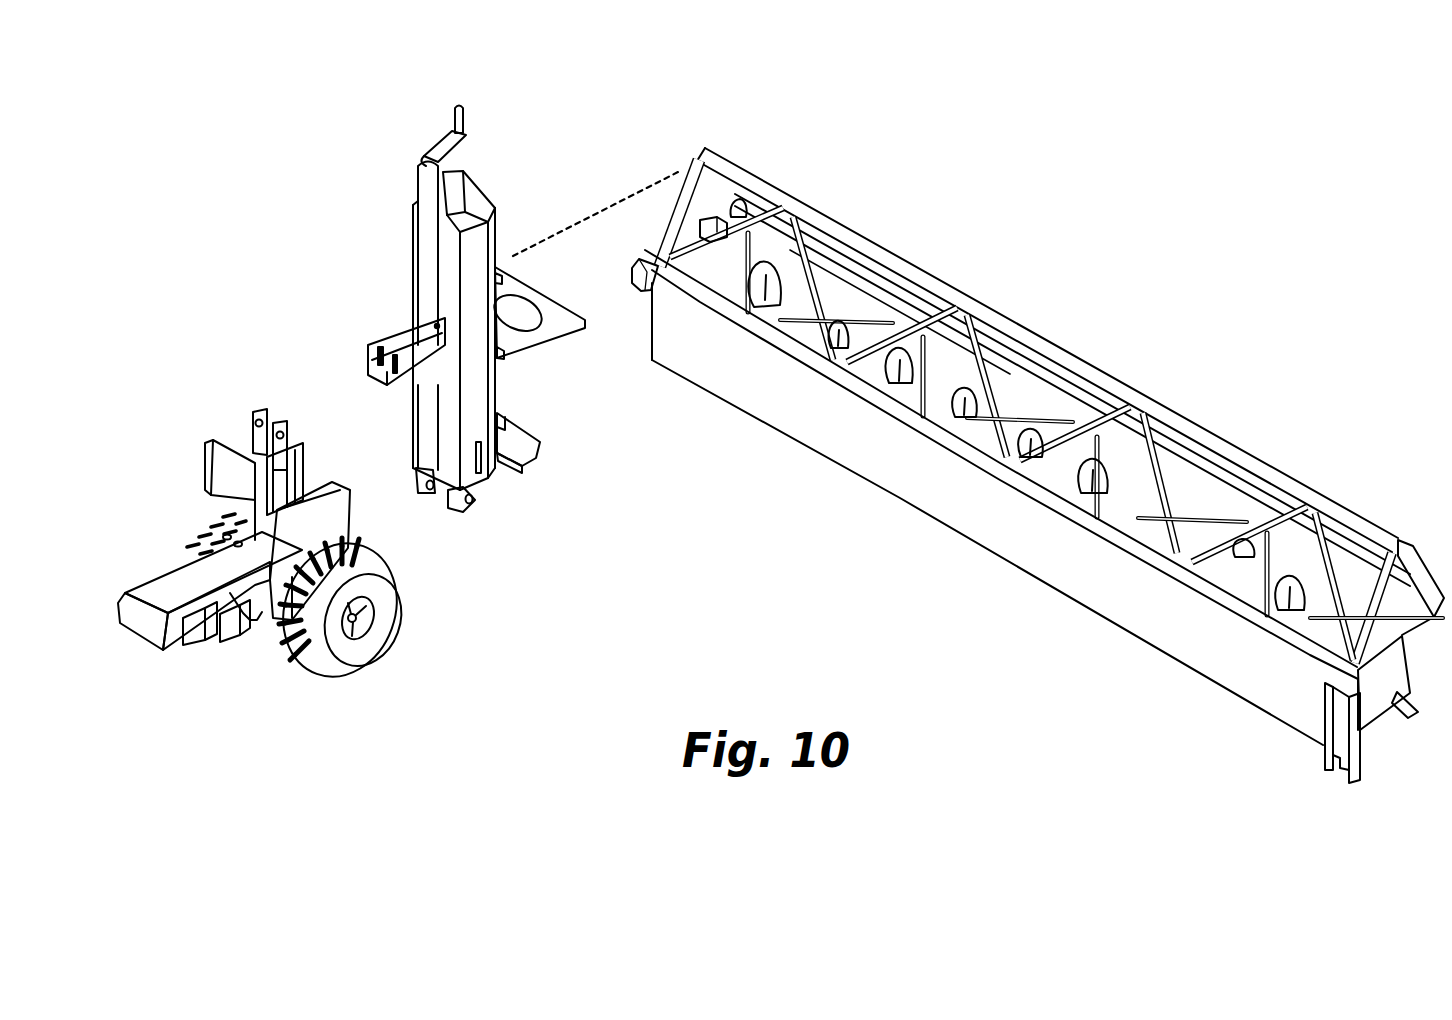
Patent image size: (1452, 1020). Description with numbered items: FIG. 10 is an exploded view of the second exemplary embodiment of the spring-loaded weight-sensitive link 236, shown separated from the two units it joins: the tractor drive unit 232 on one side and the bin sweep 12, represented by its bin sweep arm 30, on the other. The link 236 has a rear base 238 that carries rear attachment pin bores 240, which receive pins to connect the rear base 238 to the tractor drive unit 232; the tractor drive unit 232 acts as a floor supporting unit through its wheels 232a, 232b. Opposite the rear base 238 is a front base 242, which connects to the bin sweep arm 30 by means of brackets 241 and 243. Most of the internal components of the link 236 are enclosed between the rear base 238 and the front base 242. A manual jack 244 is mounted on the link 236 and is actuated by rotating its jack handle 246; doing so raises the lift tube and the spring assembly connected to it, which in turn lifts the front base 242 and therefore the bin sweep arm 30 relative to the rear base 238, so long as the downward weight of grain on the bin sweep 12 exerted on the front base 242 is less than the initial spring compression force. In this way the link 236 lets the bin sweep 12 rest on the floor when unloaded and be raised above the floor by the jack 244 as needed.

The bin sweep 12 is at (905, 540).
The bin sweep arm 30 is at (1072, 356).
The tractor drive unit 232 is at (274, 595).
The wheel 232a is at (198, 530).
The wheel 232b is at (372, 638).
The spring-loaded weight-sensitive link 236 is at (456, 332).
The rear base 238 is at (437, 500).
The rear attachment pin bores 240 is at (387, 372).
The bracket 241 is at (540, 296).
The front base 242 is at (496, 386).
The bracket 243 is at (540, 458).
The manual jack 244 is at (413, 236).
The jack handle 246 is at (455, 130).